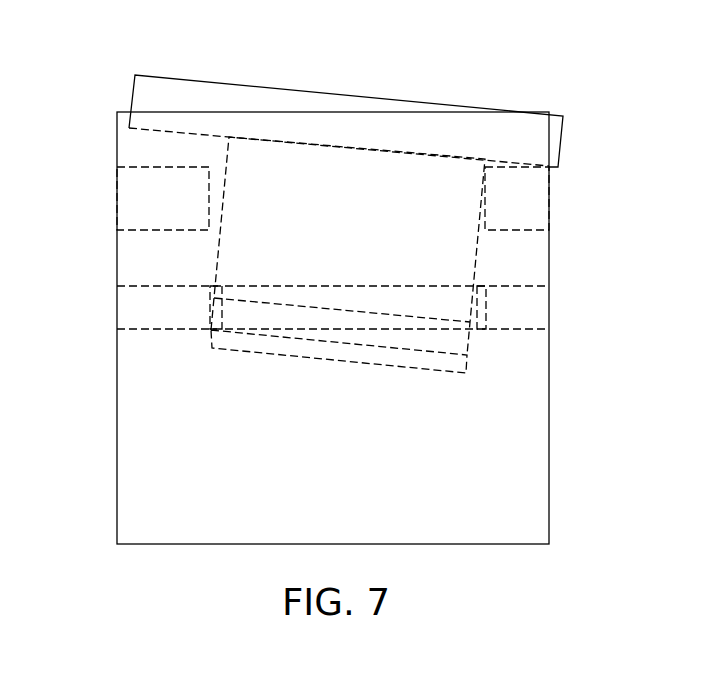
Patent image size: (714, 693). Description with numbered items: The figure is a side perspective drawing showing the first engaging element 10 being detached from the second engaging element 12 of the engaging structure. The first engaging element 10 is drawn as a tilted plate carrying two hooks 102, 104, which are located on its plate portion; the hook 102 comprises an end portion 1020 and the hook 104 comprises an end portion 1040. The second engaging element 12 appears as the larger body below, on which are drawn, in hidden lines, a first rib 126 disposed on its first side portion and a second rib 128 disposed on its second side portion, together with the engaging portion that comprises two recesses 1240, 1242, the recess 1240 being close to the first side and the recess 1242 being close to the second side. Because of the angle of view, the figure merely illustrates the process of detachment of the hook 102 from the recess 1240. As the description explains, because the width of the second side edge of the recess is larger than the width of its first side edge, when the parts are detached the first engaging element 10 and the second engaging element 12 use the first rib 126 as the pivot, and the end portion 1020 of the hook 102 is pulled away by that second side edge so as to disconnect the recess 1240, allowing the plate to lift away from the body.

The first engaging element 10 is at (341, 84).
The second engaging element 12 is at (102, 373).
The hook 102 is at (255, 245).
The hook 104 is at (225, 160).
The end portion 1020 is at (285, 281).
The end portion 1040 is at (210, 303).
The first rib 126 is at (377, 201).
The second rib 128 is at (522, 202).
The recess 1240 is at (339, 384).
The recess 1242 is at (348, 330).